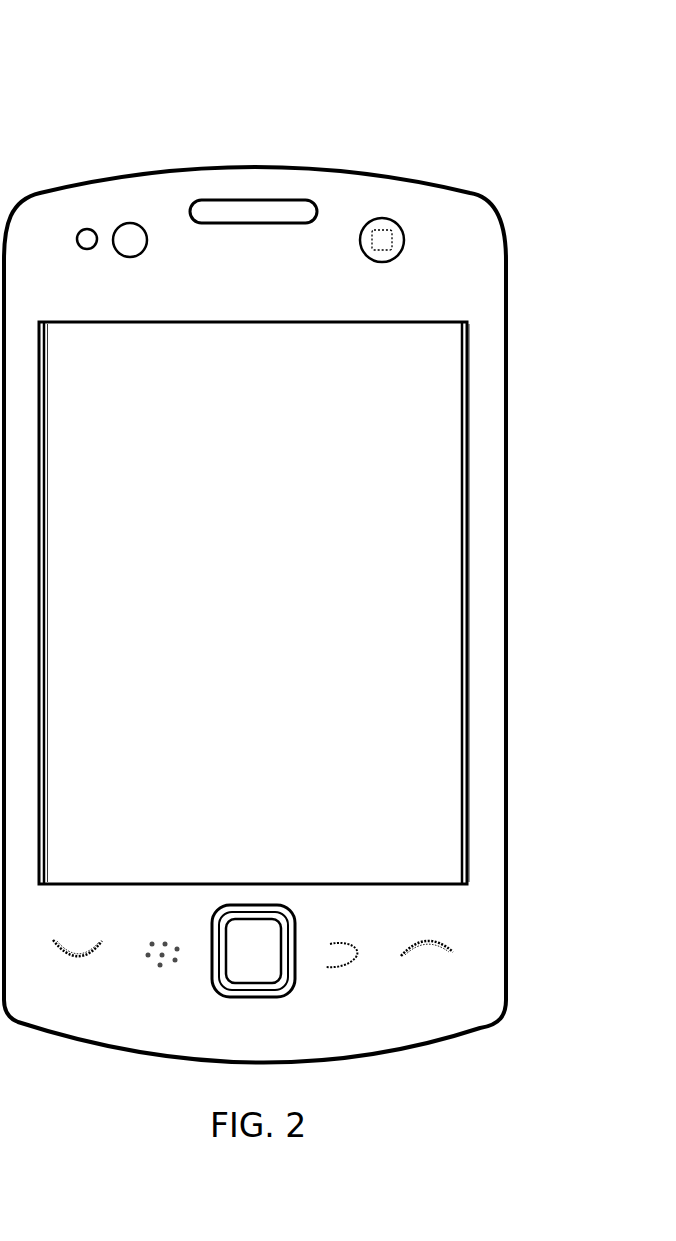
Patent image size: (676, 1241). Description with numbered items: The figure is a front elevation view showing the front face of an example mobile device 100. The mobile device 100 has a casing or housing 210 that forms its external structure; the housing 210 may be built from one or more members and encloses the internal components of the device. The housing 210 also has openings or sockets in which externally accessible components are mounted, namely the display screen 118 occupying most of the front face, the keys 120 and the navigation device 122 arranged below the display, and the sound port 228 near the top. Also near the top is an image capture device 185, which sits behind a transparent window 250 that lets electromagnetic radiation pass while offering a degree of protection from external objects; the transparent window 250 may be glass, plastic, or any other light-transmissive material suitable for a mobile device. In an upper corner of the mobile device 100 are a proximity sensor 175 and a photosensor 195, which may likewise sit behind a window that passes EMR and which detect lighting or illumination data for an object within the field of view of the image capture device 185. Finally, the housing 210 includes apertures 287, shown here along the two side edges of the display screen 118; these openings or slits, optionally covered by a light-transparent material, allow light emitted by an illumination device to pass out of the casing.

The mobile device 100 is at (106, 42).
The display screen 118 is at (372, 576).
The keys 120 is at (442, 958).
The navigation device 122 is at (272, 967).
The proximity sensor 175 is at (133, 232).
The image capture device 185 is at (392, 248).
The photosensor 195 is at (88, 229).
The housing 210 is at (492, 661).
The sound port 228 is at (295, 212).
The transparent window 250 is at (380, 260).
The apertures 287 is at (463, 513).